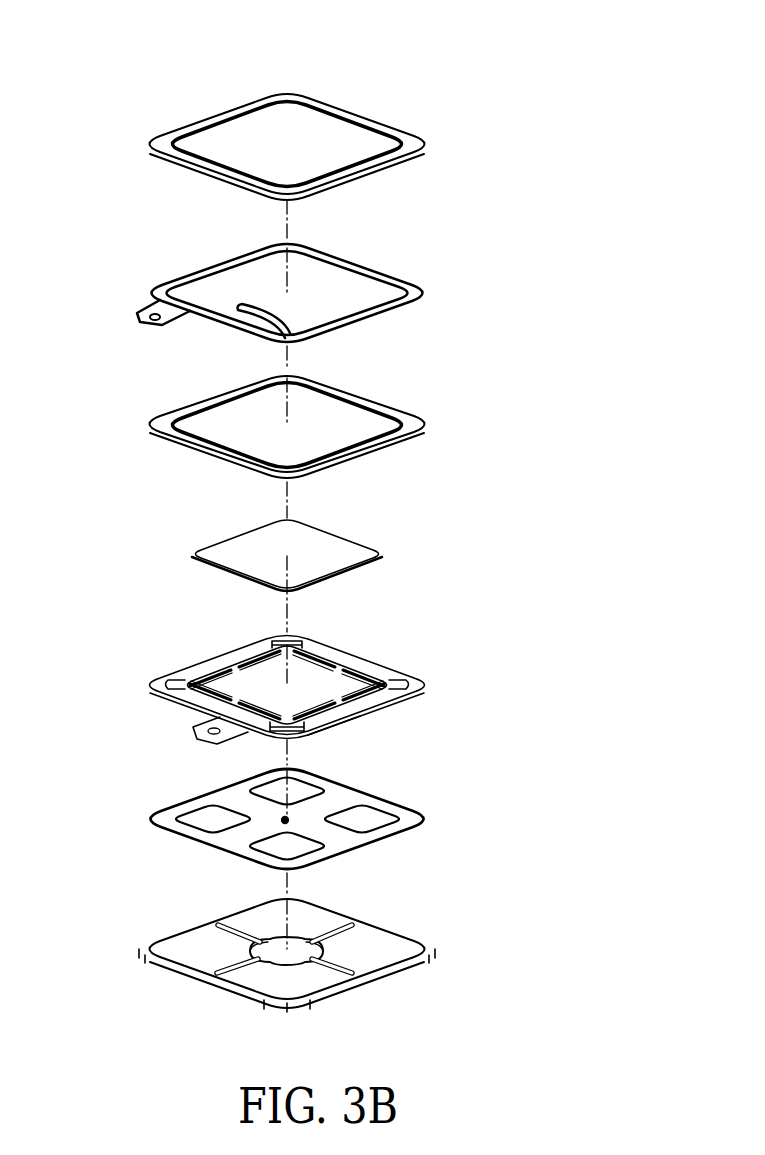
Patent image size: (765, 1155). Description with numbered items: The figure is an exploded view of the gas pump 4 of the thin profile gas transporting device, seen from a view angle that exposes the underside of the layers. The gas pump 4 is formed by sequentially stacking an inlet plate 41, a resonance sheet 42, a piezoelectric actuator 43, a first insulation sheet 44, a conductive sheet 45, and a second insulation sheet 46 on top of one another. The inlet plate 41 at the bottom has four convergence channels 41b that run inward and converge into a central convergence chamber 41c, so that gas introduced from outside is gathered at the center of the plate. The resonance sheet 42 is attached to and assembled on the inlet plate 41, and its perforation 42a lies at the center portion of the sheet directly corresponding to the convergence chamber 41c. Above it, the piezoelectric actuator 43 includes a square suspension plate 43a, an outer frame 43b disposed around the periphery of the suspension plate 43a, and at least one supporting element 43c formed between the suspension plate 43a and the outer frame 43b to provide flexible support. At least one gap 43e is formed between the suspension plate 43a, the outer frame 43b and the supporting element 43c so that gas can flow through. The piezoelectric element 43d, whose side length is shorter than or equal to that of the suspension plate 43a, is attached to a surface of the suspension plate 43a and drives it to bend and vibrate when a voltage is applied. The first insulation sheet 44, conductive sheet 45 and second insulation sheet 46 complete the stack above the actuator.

The gas pump 4 is at (290, 34).
The second insulation sheet 46 is at (422, 104).
The conductive sheet 45 is at (422, 256).
The first insulation sheet 44 is at (421, 382).
The piezoelectric actuator 43 is at (540, 548).
The piezoelectric element 43d is at (378, 530).
The gap 43e is at (305, 650).
The suspension plate 43a is at (355, 690).
The outer frame 43b is at (413, 685).
The supporting element 43c is at (355, 727).
The resonance sheet 42 is at (422, 788).
The perforation 42a is at (283, 818).
The inlet plate 41 is at (424, 918).
The convergence chamber 41c is at (277, 950).
The convergence channel 41b is at (232, 962).